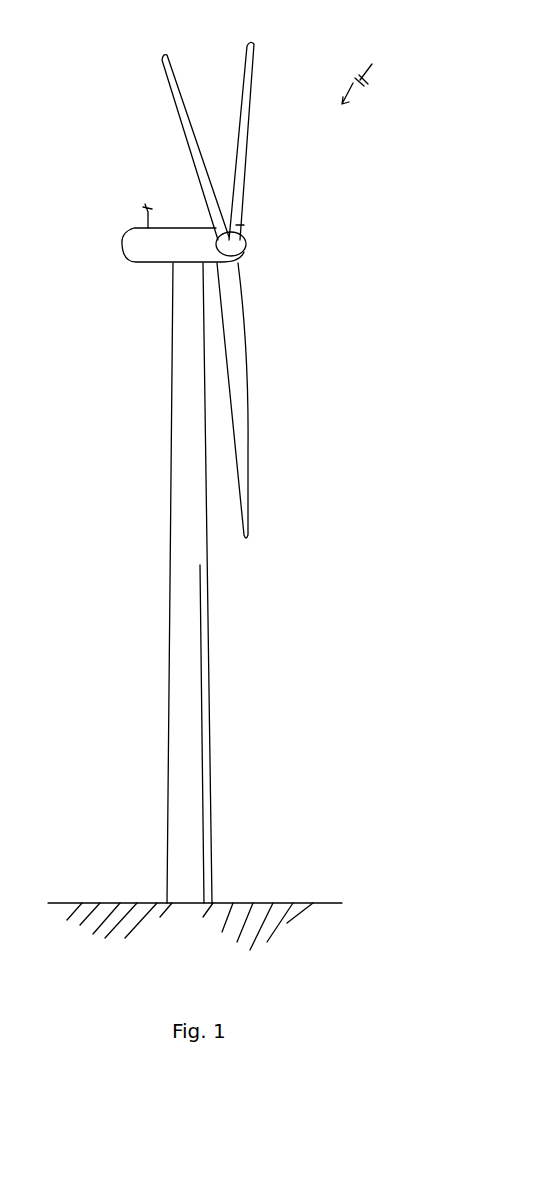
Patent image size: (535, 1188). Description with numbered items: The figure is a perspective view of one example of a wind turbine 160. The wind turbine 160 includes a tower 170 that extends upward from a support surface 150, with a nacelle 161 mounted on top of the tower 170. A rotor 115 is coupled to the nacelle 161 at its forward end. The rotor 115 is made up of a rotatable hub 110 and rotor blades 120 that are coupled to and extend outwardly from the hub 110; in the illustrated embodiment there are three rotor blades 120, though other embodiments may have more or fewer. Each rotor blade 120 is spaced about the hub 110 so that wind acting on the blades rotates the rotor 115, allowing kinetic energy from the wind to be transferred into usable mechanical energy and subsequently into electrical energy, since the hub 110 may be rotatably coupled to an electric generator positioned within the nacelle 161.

The hub 110 is at (248, 248).
The rotor 115 is at (250, 223).
The rotor blade 120 is at (240, 75).
The support surface 150 is at (110, 903).
The wind turbine 160 is at (386, 78).
The nacelle 161 is at (151, 265).
The tower 170 is at (180, 672).